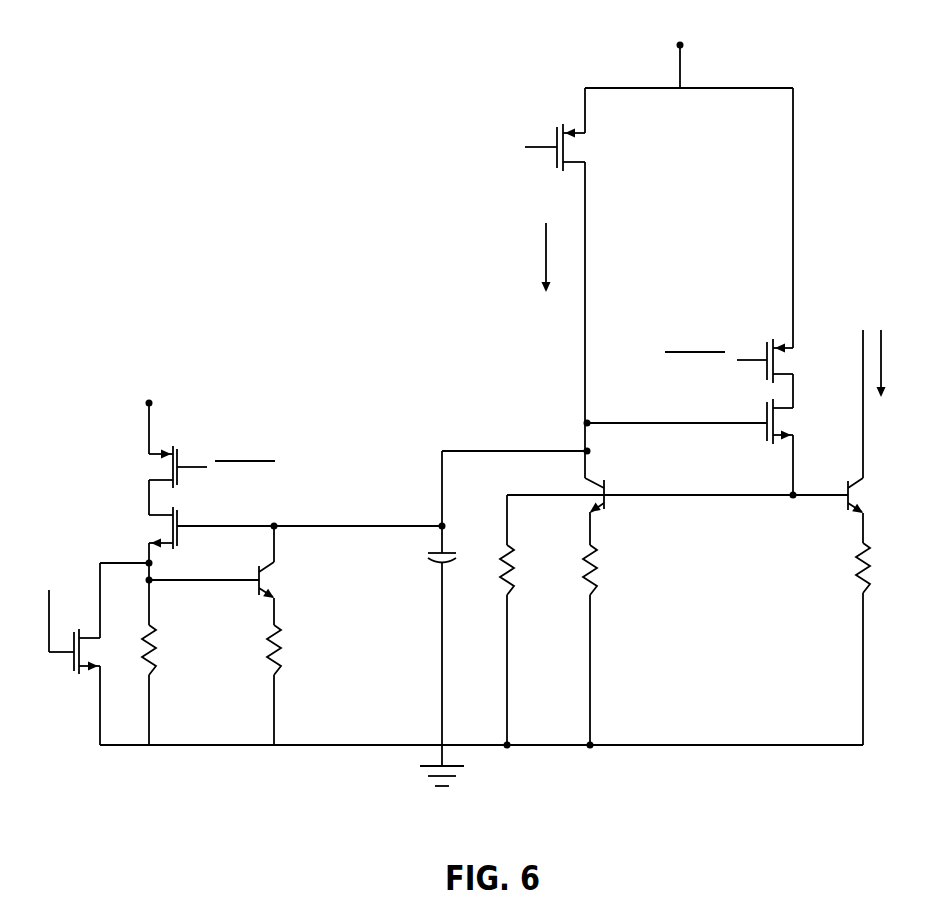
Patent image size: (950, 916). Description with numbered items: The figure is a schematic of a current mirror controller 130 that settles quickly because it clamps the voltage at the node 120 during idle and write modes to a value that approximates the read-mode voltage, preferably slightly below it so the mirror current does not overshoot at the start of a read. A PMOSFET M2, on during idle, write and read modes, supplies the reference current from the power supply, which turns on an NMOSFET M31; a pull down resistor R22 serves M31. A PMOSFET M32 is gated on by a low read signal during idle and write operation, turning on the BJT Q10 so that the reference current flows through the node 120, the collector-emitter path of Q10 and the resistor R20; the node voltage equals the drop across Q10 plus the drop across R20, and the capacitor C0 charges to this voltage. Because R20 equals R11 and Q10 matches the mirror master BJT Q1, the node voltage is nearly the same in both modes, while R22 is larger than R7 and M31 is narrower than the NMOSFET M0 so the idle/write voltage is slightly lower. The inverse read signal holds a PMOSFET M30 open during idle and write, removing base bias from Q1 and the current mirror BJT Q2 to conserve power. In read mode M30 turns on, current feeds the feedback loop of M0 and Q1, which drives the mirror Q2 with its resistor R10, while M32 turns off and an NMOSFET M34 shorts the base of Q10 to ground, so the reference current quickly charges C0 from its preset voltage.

The current mirror controller 130 is at (303, 266).
The node 120 is at (584, 423).
The PMOSFET M2 is at (556, 139).
The PMOSFET M30 is at (729, 360).
The NMOSFET M0 is at (748, 445).
The PMOSFET M32 is at (187, 480).
The NMOSFET M31 is at (270, 566).
The NMOSFET M34 is at (58, 654).
The mirror master BJT Q1 is at (612, 511).
The current mirror BJT Q2 is at (876, 436).
The BJT Q10 is at (271, 575).
The resistor R7 is at (524, 622).
The resistor R11 is at (612, 647).
The resistor R10 is at (837, 644).
The pull down resistor R22 is at (172, 685).
The resistor R20 is at (297, 685).
The capacitor C0 is at (426, 608).